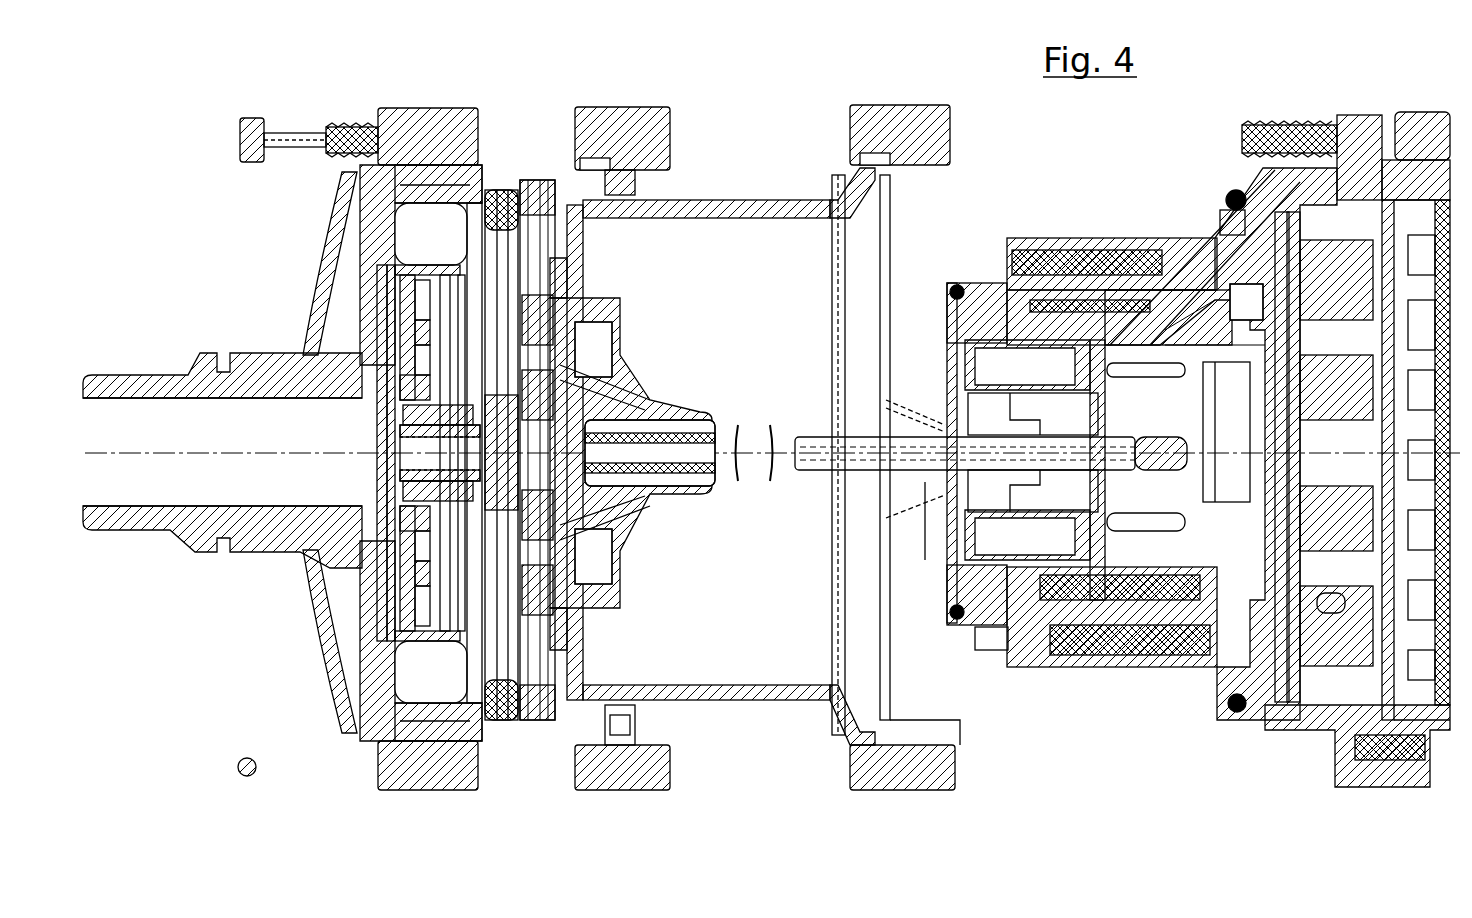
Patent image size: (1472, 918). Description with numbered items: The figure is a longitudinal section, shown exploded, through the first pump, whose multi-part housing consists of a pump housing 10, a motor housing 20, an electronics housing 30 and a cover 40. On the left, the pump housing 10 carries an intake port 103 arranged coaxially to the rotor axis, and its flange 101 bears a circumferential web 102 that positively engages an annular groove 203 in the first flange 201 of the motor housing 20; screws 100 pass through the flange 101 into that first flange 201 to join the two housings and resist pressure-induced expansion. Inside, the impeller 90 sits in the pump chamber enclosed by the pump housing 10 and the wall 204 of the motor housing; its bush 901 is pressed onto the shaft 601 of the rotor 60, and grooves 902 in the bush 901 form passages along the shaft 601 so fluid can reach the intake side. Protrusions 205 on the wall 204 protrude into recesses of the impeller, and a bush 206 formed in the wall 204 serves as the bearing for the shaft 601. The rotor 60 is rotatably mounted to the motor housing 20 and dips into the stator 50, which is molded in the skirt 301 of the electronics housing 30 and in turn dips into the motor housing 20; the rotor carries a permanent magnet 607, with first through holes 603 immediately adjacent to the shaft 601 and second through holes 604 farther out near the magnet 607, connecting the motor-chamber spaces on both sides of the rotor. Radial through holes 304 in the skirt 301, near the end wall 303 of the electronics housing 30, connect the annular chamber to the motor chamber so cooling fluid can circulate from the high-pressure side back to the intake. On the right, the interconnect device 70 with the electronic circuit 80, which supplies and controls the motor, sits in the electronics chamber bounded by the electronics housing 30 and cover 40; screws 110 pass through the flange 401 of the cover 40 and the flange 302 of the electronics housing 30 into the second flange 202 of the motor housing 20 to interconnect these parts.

The pump housing 10 is at (425, 102).
The flange 101 is at (478, 118).
The circumferential web 102 is at (500, 190).
The intake port 103 is at (160, 375).
The screws 100 is at (245, 165).
The impeller 90 is at (362, 590).
The bush 901 is at (348, 548).
The grooves 902 is at (378, 485).
The protrusions 205 is at (530, 740).
The motor housing 20 is at (754, 102).
The first flange 201 is at (642, 105).
The second flange 202 is at (906, 103).
The annular groove 203 is at (605, 110).
The wall 204 is at (592, 235).
The bush 206 is at (668, 475).
The rotor 60 is at (935, 395).
The shaft 601 is at (927, 565).
The stator 50 is at (1112, 668).
The first through holes 603 is at (990, 283).
The second through holes 604 is at (1017, 668).
The permanent magnet 607 is at (1020, 238).
The electronics housing 30 is at (1105, 200).
The skirt 301 is at (1190, 240).
The radial through holes 304 is at (1190, 668).
The end wall 303 is at (1255, 715).
The interconnect device 70 is at (1232, 195).
The screws 110 is at (1250, 128).
The electronic circuit 80 is at (1285, 225).
The flange 302 is at (1360, 115).
The cover 40 is at (1402, 110).
The flange 401 is at (1430, 112).